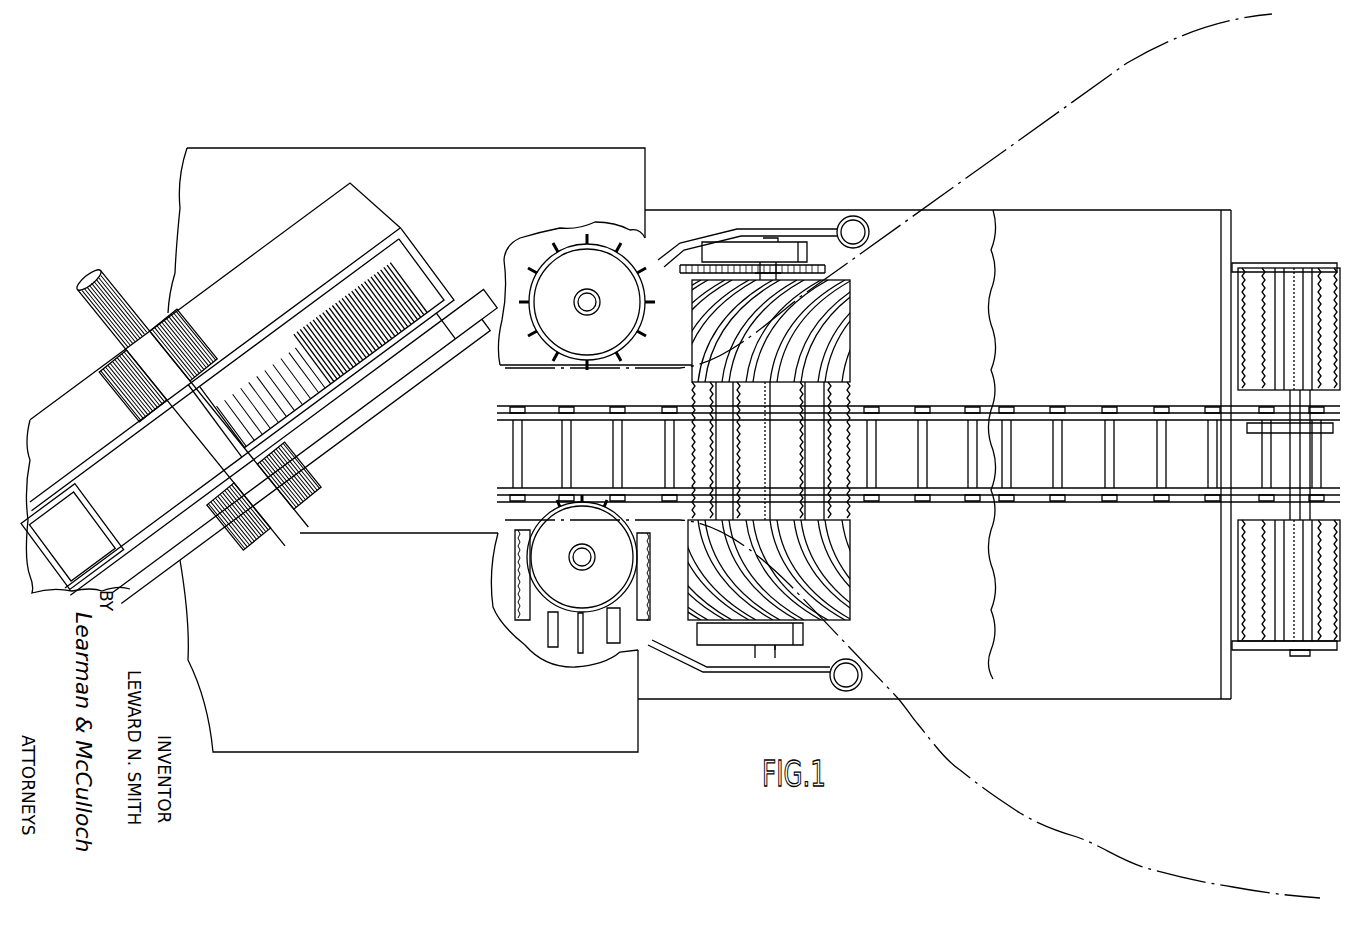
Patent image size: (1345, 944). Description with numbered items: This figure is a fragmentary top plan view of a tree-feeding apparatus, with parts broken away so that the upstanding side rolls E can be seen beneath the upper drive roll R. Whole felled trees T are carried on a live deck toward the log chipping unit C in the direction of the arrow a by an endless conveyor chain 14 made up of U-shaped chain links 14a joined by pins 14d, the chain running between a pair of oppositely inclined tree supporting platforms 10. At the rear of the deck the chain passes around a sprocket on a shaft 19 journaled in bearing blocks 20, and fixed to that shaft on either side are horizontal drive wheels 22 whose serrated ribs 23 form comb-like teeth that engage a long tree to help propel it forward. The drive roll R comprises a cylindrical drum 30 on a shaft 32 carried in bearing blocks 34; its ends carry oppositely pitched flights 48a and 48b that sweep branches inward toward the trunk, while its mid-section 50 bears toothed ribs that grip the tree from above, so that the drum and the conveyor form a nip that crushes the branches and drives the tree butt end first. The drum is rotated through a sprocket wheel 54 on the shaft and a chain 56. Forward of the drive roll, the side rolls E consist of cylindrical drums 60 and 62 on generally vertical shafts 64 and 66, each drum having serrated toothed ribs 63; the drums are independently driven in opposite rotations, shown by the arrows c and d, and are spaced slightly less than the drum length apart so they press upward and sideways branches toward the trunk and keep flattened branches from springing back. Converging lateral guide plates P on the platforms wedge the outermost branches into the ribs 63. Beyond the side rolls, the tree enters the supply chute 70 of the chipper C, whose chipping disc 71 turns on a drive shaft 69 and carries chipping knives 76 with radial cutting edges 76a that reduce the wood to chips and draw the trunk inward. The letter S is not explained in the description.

The tree supporting platform 10 is at (1130, 222).
The conveyor chain 14 is at (1086, 500).
The chain link 14a is at (904, 414).
The pin 14d is at (1116, 414).
The shaft 19 is at (1294, 656).
The bearing block 20 is at (1252, 262).
The drive wheel 22 is at (1278, 268).
The serrated rib 23 is at (1320, 268).
The cylindrical drum 30 is at (850, 523).
The shaft 32 is at (764, 648).
The bearing block 34 is at (782, 641).
The flights 48a is at (838, 305).
The flights 48b is at (848, 566).
The mid-section 50 is at (688, 441).
The sprocket wheel 54 is at (818, 276).
The chain 56 is at (683, 275).
The cylindrical drum 60 is at (532, 610).
The cylindrical drum 62 is at (582, 257).
The toothed rib 63 is at (534, 252).
The vertical shaft 64 is at (582, 553).
The vertical shaft 66 is at (590, 300).
The drive shaft 69 is at (106, 298).
The supply chute 70 is at (408, 512).
The chipping disc 71 is at (448, 316).
The chipping knife 76 is at (378, 368).
The cutting edge 76a is at (306, 420).
The log chipping unit C is at (228, 236).
The support S is at (72, 500).
The lateral guide plate P is at (694, 238).
The tree T is at (666, 350).
The upstanding side roll E is at (600, 498).
The drive roll R is at (852, 570).
The arrow a is at (886, 455).
The arrow c is at (628, 346).
The arrow d is at (600, 525).